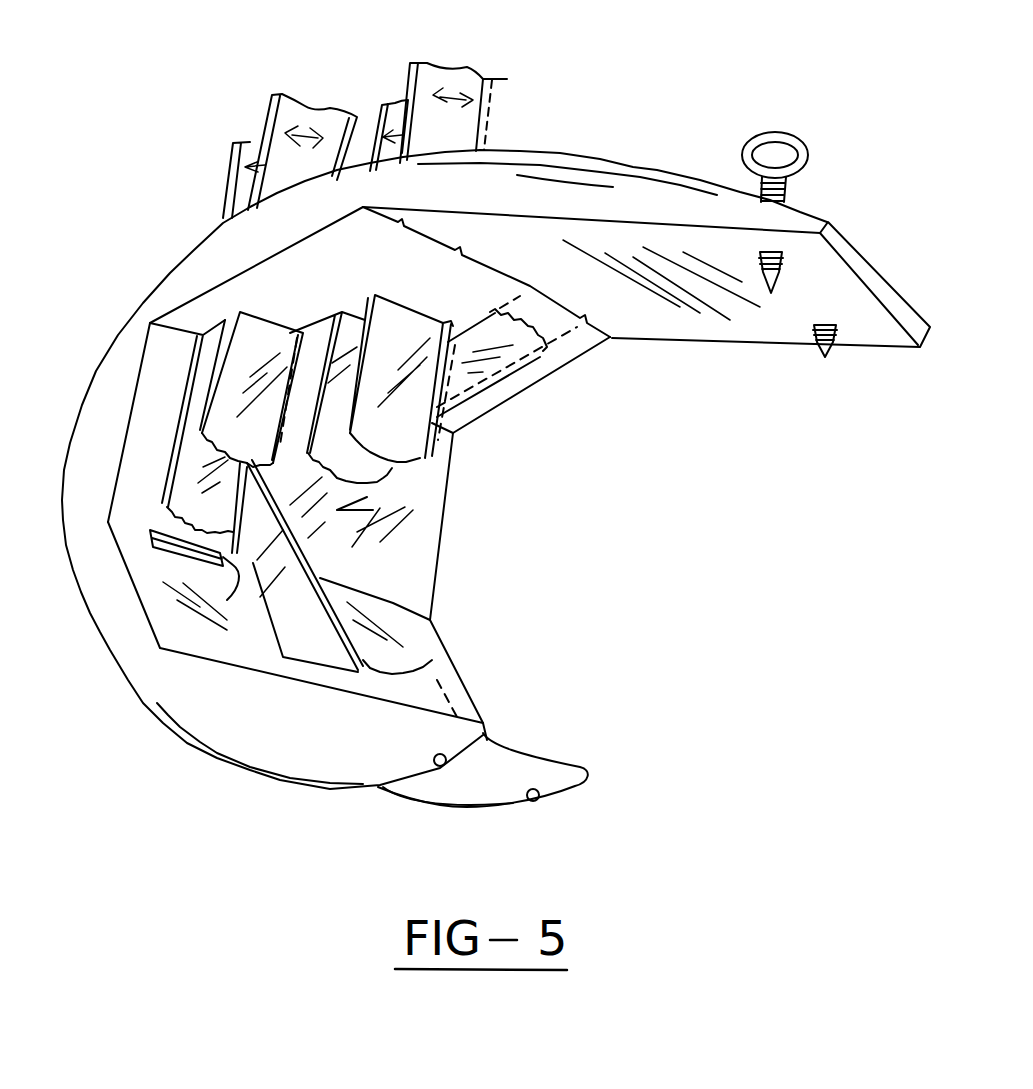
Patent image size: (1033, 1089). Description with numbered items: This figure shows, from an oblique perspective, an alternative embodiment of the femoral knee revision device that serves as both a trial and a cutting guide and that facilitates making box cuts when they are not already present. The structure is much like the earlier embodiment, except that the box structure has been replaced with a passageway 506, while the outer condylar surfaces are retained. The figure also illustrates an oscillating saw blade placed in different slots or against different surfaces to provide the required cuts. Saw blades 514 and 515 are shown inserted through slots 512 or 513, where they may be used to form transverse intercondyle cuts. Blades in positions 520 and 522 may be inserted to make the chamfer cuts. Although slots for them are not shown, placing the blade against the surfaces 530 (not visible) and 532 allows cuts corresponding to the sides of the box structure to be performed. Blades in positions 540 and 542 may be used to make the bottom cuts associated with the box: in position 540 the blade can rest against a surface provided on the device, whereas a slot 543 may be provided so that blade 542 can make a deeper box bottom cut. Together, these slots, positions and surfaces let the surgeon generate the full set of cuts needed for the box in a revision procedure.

The passageway 506 is at (395, 505).
The slot 512 is at (203, 333).
The slot 513 is at (222, 335).
The saw blade 514 is at (240, 190).
The saw blade 515 is at (288, 102).
The blade position 520 is at (523, 340).
The blade position 522 is at (405, 650).
The surface 530 is at (227, 600).
The surface 532 is at (310, 562).
The blade position 540 is at (390, 110).
The blade 542 is at (473, 77).
The slot 543 is at (405, 303).